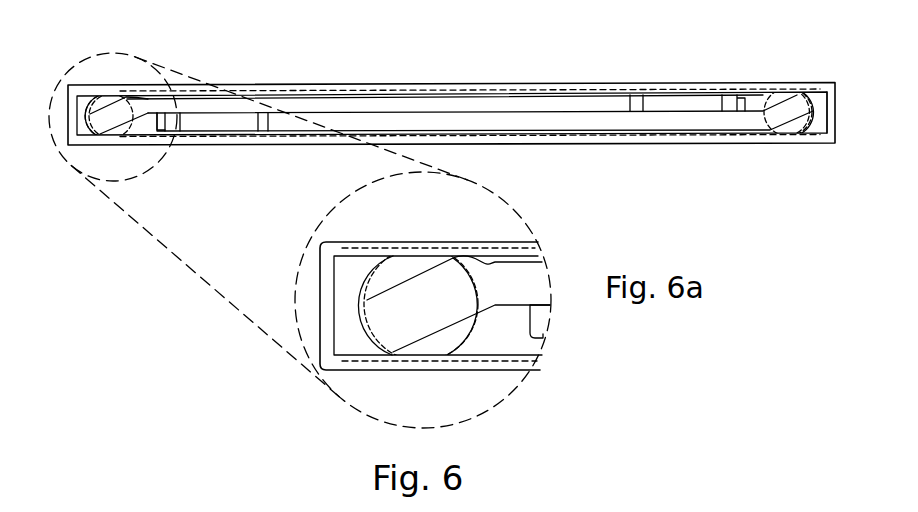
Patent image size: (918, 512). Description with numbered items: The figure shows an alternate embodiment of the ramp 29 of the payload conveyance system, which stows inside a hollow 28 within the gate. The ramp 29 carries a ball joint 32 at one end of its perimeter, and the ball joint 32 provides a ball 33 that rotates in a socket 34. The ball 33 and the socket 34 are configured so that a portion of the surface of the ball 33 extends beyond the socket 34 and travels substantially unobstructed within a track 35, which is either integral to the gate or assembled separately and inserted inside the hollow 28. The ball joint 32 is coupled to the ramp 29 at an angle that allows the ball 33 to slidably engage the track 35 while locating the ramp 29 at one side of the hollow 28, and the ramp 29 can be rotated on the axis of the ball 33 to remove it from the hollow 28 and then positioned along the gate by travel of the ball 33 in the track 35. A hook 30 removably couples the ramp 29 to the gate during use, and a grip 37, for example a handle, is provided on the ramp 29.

In FIG. 6A, the second hollow 28 is at (815, 120).
In FIG. 6A, the ramp 29 is at (516, 103).
In FIG. 6, the hook 30 is at (538, 323).
In FIG. 6A, the hook 30 is at (157, 130).
In FIG. 6, the ball joint 32 is at (368, 330).
In FIG. 6A, the ball joint 32 is at (90, 128).
In FIG. 6, the ball 33 is at (417, 250).
In FIG. 6A, the ball 33 is at (113, 95).
In FIG. 6, the socket 34 is at (402, 305).
In FIG. 6A, the socket 34 is at (112, 112).
In FIG. 6, the track 35 is at (490, 253).
In FIG. 6A, the track 35 is at (247, 98).
In FIG. 6A, the grip 37 is at (695, 105).